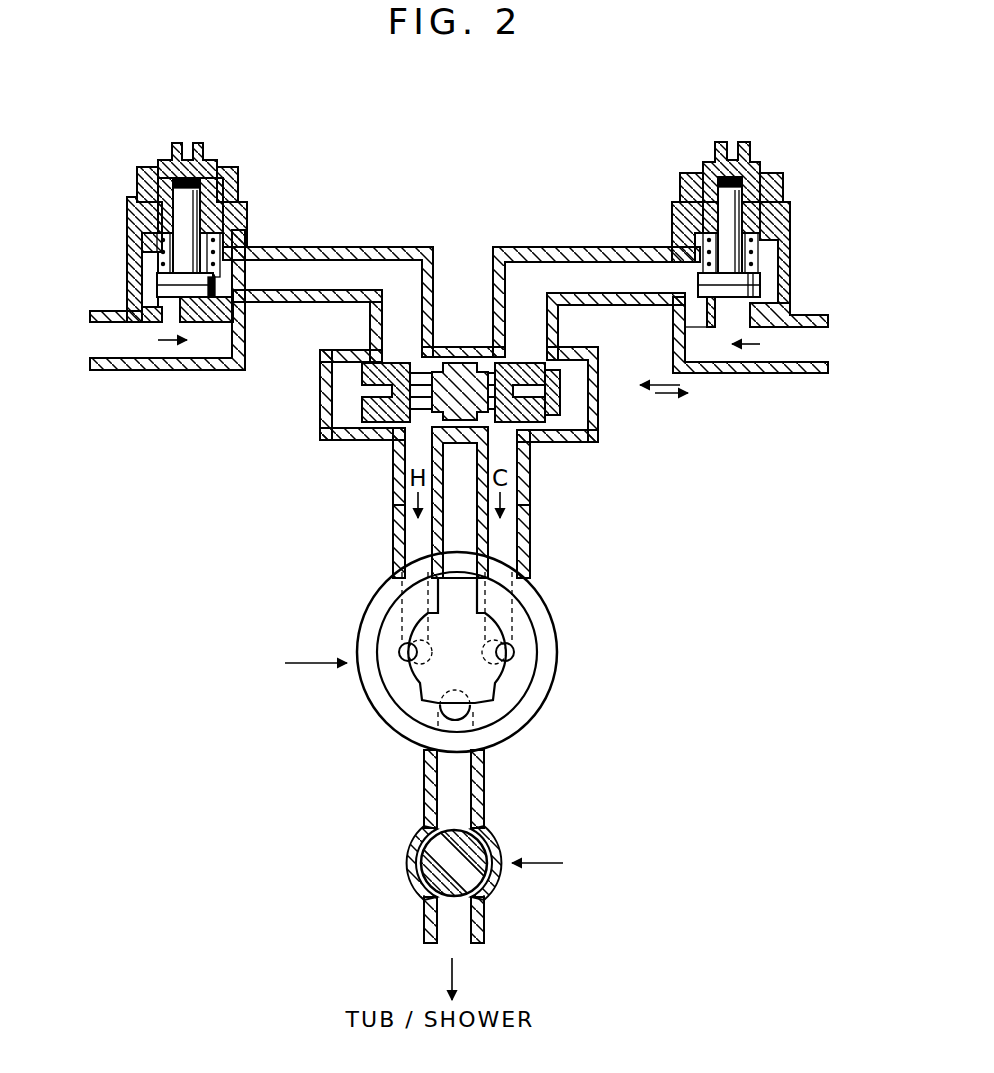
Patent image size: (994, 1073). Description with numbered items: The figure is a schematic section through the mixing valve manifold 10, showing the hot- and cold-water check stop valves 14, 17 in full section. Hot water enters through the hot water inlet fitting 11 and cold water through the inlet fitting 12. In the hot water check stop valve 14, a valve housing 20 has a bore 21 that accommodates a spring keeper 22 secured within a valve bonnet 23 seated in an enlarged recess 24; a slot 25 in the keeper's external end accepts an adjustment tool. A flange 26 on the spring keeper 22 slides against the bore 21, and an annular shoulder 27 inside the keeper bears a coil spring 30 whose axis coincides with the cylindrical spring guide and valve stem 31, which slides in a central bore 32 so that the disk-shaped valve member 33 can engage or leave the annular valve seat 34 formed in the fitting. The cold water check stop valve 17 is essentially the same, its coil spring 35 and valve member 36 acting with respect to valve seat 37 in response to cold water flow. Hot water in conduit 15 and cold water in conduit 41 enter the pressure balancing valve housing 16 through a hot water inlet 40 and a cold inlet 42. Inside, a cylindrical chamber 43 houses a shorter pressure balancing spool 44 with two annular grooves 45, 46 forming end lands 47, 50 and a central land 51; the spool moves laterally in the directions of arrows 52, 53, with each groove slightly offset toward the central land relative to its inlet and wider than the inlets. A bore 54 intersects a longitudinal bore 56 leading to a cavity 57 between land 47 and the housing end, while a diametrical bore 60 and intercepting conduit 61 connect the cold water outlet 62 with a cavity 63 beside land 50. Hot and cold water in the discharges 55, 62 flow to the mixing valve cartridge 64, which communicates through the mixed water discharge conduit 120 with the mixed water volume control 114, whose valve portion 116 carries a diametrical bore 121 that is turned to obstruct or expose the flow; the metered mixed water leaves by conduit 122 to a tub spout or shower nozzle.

The manifold 10 is at (128, 374).
The hot water inlet fitting 11 is at (112, 373).
The cold water inlet fitting 12 is at (800, 374).
The hot water check stop valve 14 is at (238, 124).
The hot water conduit 15 is at (352, 247).
The pressure balancing valve housing 16 is at (322, 350).
The cold water check stop valve 17 is at (790, 165).
The valve housing 20 is at (143, 240).
The bore 21 is at (227, 228).
The spring keeper 22 is at (238, 176).
The valve bonnet 23 is at (170, 158).
The enlarged recess 24 is at (148, 172).
The slot 25 is at (192, 158).
The flange 26 is at (272, 266).
The annular shoulder 27 is at (180, 278).
The coil spring 30 is at (155, 288).
The spring guide and valve stem 31 is at (213, 166).
The central bore 32 is at (206, 165).
The valve member 33 is at (158, 296).
The annular valve seat 34 is at (222, 300).
The coil spring 35 is at (765, 240).
The valve member 36 is at (763, 282).
The valve seat 37 is at (750, 315).
The hot water inlet 40 is at (436, 345).
The cold water conduit 41 is at (595, 247).
The cold water inlet 42 is at (557, 341).
The cylindrical chamber 43 is at (489, 335).
The pressure balancing spool 44 is at (406, 362).
The annular groove 45 is at (397, 458).
The annular groove 46 is at (530, 443).
The annular land 47 is at (332, 440).
The annular land 50 is at (562, 378).
The central annular land 51 is at (443, 363).
The arrow 52 is at (655, 380).
The arrow 53 is at (663, 394).
The bore 54 is at (438, 465).
The hot water discharge 55 is at (393, 512).
The longitudinal bore 56 is at (330, 360).
The cavity 57 is at (330, 405).
The diametrical bore 60 is at (525, 440).
The intercepting conduit 61 is at (507, 384).
The cold water outlet 62 is at (523, 533).
The cavity 63 is at (589, 409).
The mixing valve cartridge 64 is at (572, 640).
The mixed water volume control 114 is at (402, 850).
The valve portion 116 is at (440, 897).
The mixed water discharge conduit 120 is at (470, 792).
The bore 121 is at (493, 842).
The conduit 122 is at (468, 930).